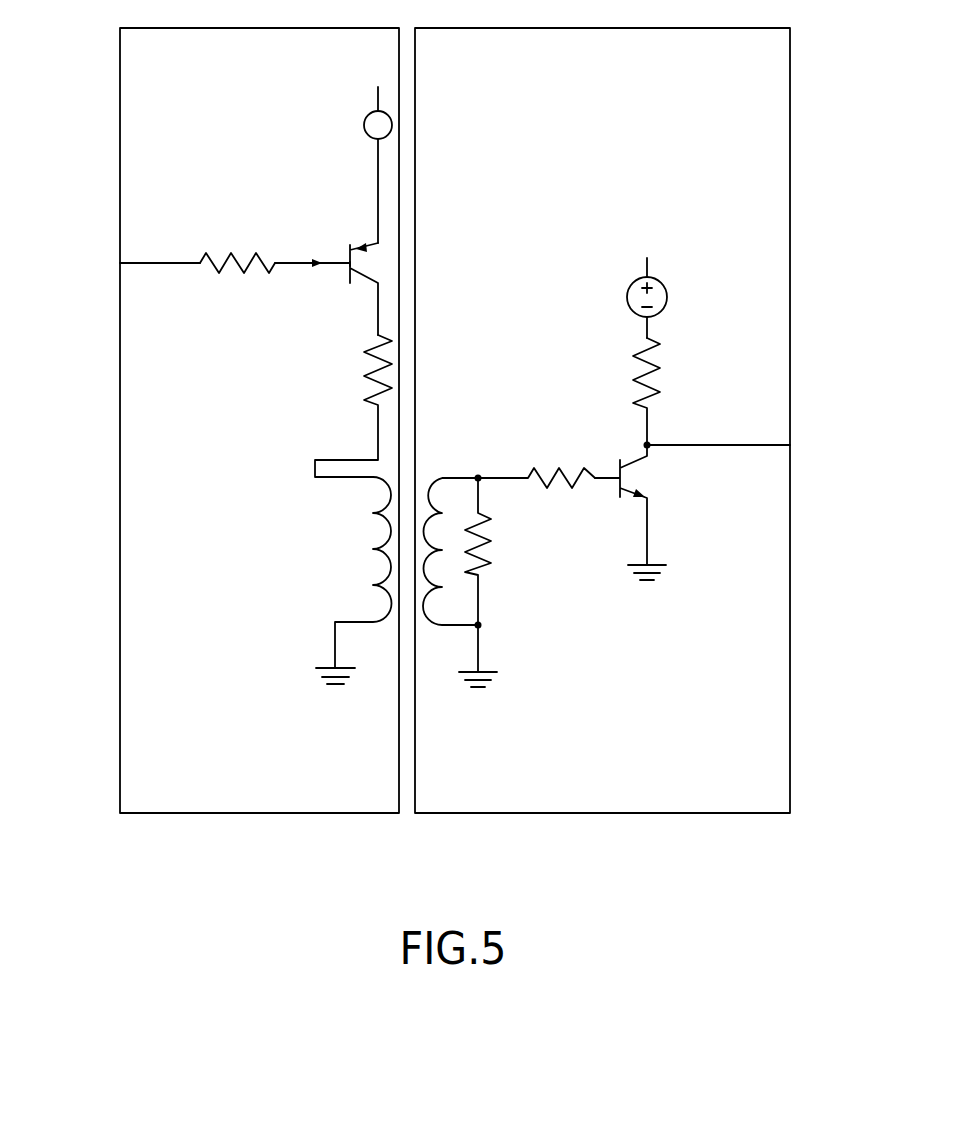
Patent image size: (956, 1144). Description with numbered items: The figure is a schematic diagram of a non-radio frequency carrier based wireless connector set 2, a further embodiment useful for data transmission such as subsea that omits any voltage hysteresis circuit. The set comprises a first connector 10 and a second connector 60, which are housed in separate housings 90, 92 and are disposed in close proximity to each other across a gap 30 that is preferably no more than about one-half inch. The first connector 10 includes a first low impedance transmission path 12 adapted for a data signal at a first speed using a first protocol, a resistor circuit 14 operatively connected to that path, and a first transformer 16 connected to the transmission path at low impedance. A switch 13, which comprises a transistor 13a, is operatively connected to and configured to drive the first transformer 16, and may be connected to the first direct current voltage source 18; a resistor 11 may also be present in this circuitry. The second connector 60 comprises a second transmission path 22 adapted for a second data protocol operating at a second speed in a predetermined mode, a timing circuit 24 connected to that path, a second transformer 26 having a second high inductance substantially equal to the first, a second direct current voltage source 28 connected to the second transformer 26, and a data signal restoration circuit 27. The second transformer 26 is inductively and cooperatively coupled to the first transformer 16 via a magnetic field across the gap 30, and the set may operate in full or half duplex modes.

The non-radio frequency carrier based wireless connector set 2 is at (97, 408).
The first connector 10 is at (102, 603).
The resistor 11 is at (215, 272).
The first low impedance transmission path 12 is at (167, 263).
The switch 13 is at (336, 238).
The transistor 13a is at (350, 280).
The resistor circuit 14 is at (368, 386).
The first transformer 16 is at (373, 548).
The first direct current voltage source 18 is at (364, 125).
The second transmission path 22 is at (735, 445).
The timing circuit 24 is at (487, 575).
The second transformer 26 is at (450, 588).
The data signal restoration circuit 27 is at (585, 437).
The second direct current voltage source 28 is at (627, 297).
The gap 30 is at (405, 178).
The second connector 60 is at (808, 460).
The housing 90 is at (120, 168).
The housing 92 is at (790, 207).